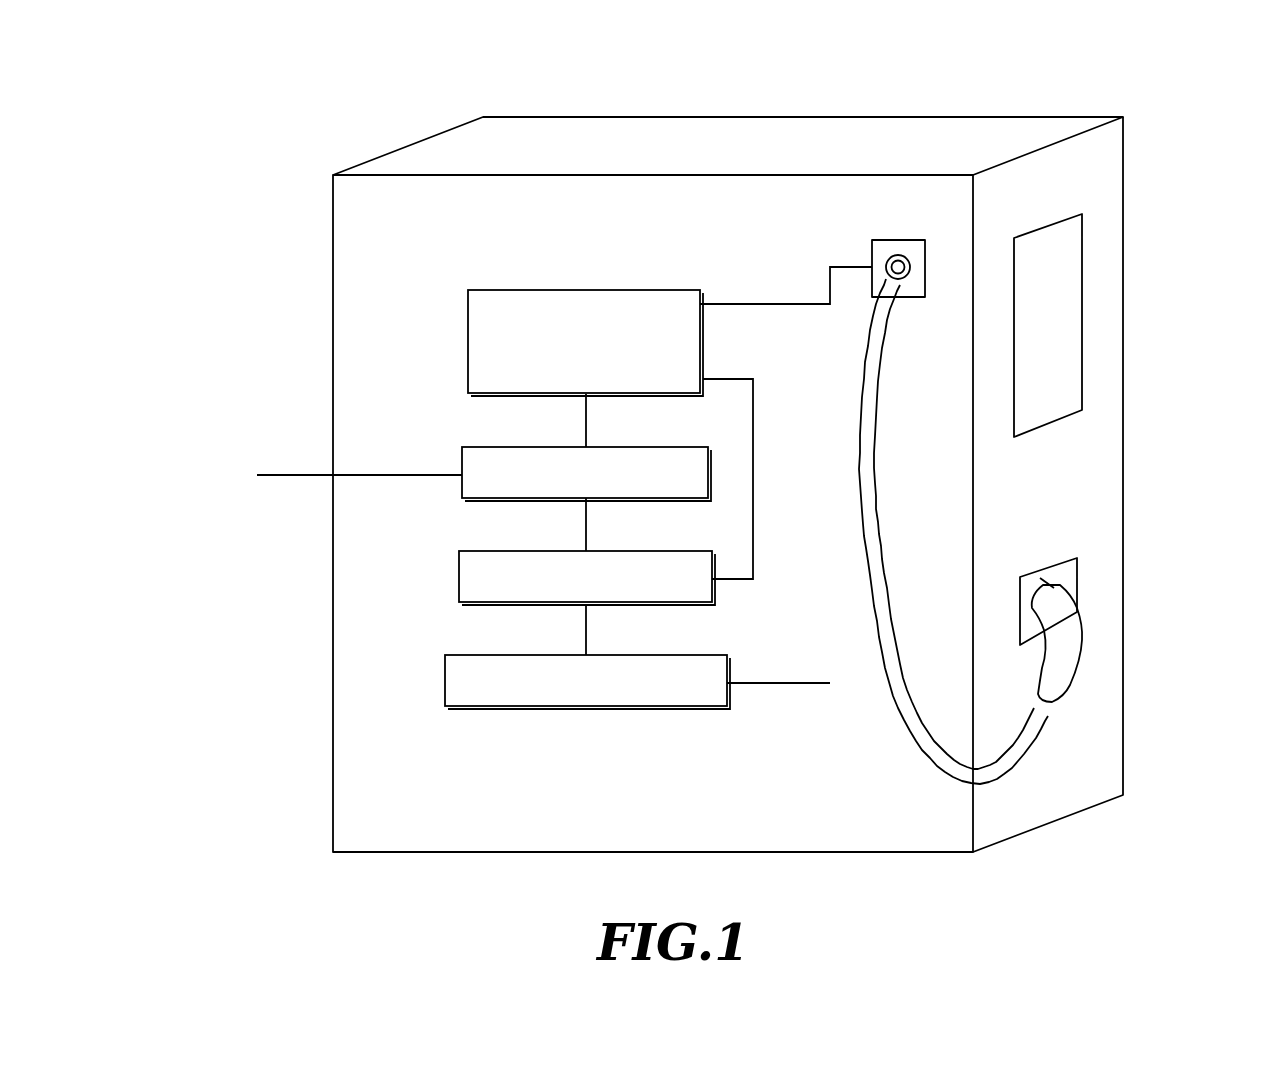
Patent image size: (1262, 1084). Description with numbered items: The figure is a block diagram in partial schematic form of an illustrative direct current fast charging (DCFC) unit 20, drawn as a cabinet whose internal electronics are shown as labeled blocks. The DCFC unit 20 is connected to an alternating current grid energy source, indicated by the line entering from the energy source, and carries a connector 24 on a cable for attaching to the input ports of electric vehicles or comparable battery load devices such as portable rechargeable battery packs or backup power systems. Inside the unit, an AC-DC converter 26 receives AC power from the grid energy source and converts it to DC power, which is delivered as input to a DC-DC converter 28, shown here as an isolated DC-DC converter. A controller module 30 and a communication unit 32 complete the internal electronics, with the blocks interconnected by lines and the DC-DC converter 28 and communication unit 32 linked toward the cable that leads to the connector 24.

The direct current fast charging (DCFC) unit 20 is at (1178, 74).
The connector 24 is at (1070, 633).
The AC-DC converter 26 is at (462, 455).
The DC-DC converter 28 is at (468, 312).
The controller module 30 is at (459, 575).
The communication unit 32 is at (445, 680).